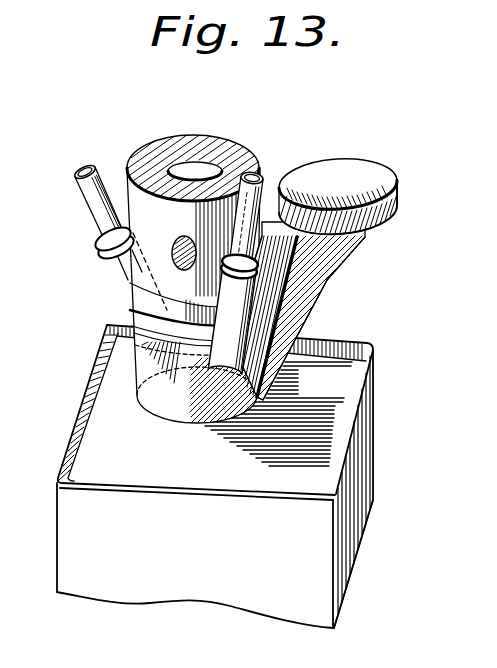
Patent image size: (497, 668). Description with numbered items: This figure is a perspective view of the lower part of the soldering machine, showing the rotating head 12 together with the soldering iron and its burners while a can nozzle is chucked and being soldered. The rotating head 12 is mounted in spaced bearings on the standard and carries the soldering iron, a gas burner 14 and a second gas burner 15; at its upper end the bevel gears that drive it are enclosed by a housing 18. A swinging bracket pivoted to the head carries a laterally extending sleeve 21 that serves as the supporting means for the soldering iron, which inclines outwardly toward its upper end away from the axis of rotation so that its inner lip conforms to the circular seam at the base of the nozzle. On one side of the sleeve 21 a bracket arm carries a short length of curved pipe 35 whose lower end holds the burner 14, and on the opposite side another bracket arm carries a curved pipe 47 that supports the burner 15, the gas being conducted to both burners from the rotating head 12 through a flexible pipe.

The rotating head 12 is at (215, 125).
The curved pipe 35 is at (91, 210).
The gas burner 14 is at (120, 262).
The curved pipe 47 is at (273, 184).
The sleeve 21 is at (386, 220).
The housing 18 is at (228, 347).
The gas burner 15 is at (243, 361).